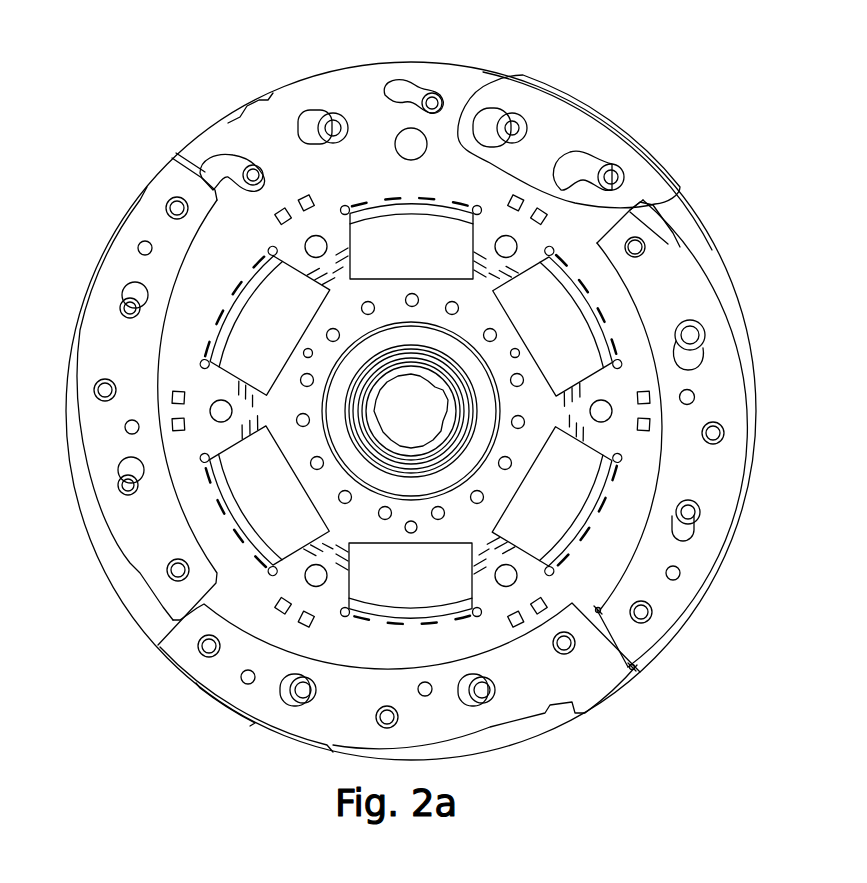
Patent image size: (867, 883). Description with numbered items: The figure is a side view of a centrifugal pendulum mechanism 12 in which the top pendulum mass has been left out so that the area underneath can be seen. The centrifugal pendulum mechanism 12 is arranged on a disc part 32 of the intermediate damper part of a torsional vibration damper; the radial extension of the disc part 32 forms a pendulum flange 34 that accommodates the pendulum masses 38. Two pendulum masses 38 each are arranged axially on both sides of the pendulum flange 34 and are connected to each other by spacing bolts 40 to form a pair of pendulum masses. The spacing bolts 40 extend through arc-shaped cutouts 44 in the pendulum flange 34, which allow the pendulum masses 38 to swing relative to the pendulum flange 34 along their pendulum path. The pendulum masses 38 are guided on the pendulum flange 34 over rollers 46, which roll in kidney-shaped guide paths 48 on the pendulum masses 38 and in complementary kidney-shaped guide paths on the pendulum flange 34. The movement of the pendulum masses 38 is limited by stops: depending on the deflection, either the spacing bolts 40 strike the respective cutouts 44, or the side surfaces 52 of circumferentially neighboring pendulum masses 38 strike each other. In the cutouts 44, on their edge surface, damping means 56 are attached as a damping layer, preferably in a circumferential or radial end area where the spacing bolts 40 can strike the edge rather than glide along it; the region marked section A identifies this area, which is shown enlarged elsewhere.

The centrifugal pendulum mechanism 12 is at (269, 90).
The disc part 32 is at (178, 362).
The pendulum flange 34 is at (196, 150).
The pendulum masses 38 is at (675, 278).
The spacing bolts 40 is at (620, 173).
The cutouts 44 is at (590, 158).
The rollers 46 is at (525, 118).
The kidney-shaped guide paths 48 is at (692, 358).
The side surfaces 52 is at (600, 610).
The damping means 56 is at (605, 154).
The section A is at (527, 77).